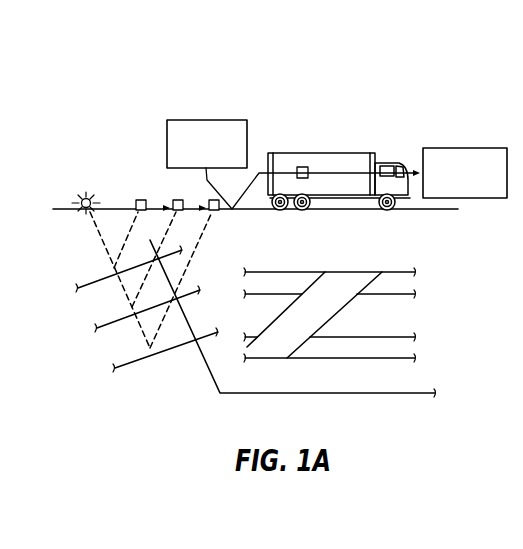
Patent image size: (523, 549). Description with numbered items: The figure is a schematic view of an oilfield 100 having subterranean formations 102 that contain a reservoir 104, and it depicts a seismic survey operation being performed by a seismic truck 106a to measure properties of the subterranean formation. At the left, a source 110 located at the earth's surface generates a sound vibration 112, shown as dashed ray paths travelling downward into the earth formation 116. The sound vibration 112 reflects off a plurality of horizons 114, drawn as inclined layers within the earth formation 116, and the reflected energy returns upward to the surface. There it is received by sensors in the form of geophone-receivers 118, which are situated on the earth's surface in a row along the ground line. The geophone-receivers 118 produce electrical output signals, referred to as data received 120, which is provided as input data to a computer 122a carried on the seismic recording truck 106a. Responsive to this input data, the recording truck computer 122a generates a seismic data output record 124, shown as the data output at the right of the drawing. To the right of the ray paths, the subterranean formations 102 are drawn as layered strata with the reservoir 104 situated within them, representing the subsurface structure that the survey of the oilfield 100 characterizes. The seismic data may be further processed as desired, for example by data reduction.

The oilfield 100 is at (458, 126).
The subterranean formations 102 is at (396, 261).
The reservoir 104 is at (398, 323).
The seismic truck 106a is at (365, 153).
The source 110 is at (83, 194).
The sound vibration 112 is at (127, 243).
The horizons 114 is at (83, 283).
The earth formation 116 is at (205, 366).
The geophone-receivers 118 is at (211, 200).
The data received 120 is at (192, 119).
The computer 122a is at (306, 167).
The seismic data output record 124 is at (477, 149).